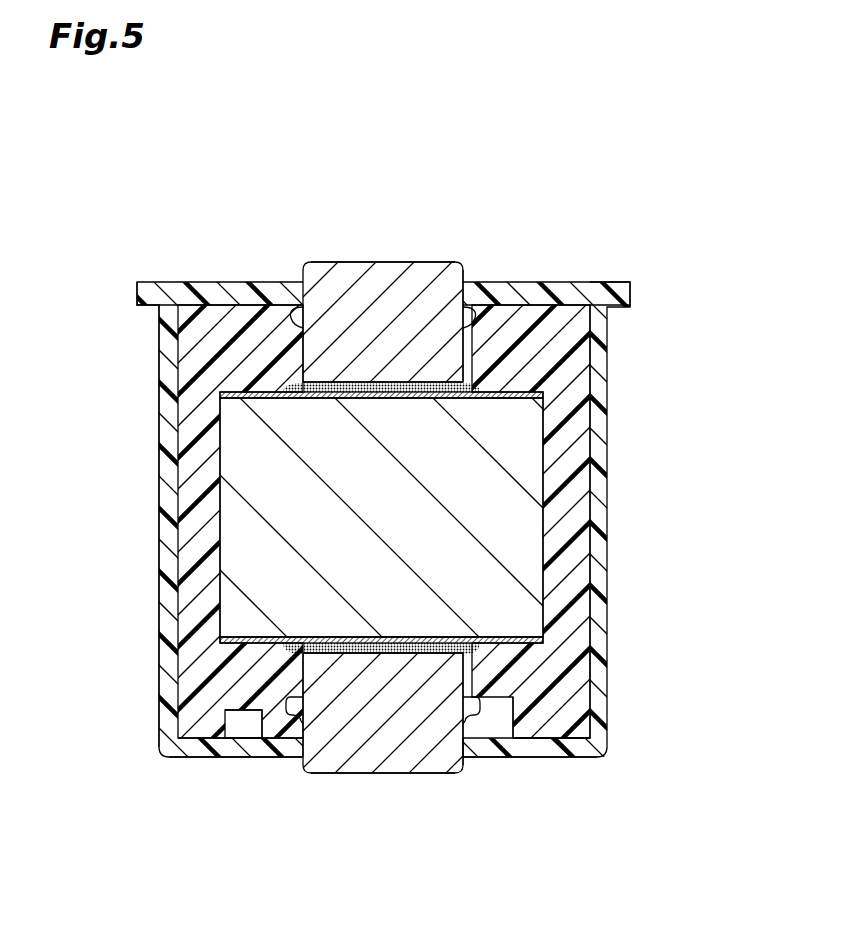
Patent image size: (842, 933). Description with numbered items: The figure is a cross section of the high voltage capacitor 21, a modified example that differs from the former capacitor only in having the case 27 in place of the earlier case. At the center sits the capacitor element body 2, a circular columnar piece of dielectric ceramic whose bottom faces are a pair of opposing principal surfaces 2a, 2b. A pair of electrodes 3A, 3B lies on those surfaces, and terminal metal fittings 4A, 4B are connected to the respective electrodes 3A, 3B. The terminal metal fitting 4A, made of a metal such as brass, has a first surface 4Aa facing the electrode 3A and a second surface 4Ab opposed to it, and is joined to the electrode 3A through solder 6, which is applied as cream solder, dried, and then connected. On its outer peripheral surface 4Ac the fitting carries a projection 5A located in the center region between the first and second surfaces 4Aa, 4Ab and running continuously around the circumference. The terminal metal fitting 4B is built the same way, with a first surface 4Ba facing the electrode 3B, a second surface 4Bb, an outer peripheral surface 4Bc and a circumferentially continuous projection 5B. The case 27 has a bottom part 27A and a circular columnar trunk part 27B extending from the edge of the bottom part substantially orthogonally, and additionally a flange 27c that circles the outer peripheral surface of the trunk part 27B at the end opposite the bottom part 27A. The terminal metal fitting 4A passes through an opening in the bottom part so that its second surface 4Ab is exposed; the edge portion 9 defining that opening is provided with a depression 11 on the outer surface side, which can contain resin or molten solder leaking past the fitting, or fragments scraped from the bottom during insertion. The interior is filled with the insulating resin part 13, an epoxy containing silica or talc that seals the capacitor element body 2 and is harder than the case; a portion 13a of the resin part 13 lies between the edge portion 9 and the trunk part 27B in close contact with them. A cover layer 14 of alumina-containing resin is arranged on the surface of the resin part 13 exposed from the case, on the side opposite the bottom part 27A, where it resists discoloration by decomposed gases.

The high voltage capacitor 21 is at (548, 162).
The capacitor element body 2 is at (233, 513).
The principal surface 2a is at (300, 651).
The principal surface 2b is at (300, 386).
The electrode 3A is at (548, 640).
The electrode 3B is at (548, 396).
The terminal metal fitting 4A is at (362, 764).
The first surface 4Aa is at (335, 636).
The second surface 4Ab is at (430, 766).
The outer peripheral surface 4Ac is at (457, 770).
The terminal metal fitting 4B is at (323, 261).
The first surface 4Ba is at (335, 396).
The second surface 4Bb is at (360, 261).
The outer peripheral surface 4Bc is at (443, 360).
The projection 5A is at (287, 699).
The projection 5B is at (291, 322).
The solder 6 is at (482, 378).
The edge portion 9 is at (277, 730).
The depression 11 is at (458, 742).
The resin part 13 is at (580, 333).
The portion of the resin part 13a is at (554, 718).
The cover layer 14 is at (612, 302).
The case 27 is at (600, 456).
The bottom part 27A is at (250, 746).
The trunk part 27B is at (159, 486).
The flange 27c is at (618, 283).